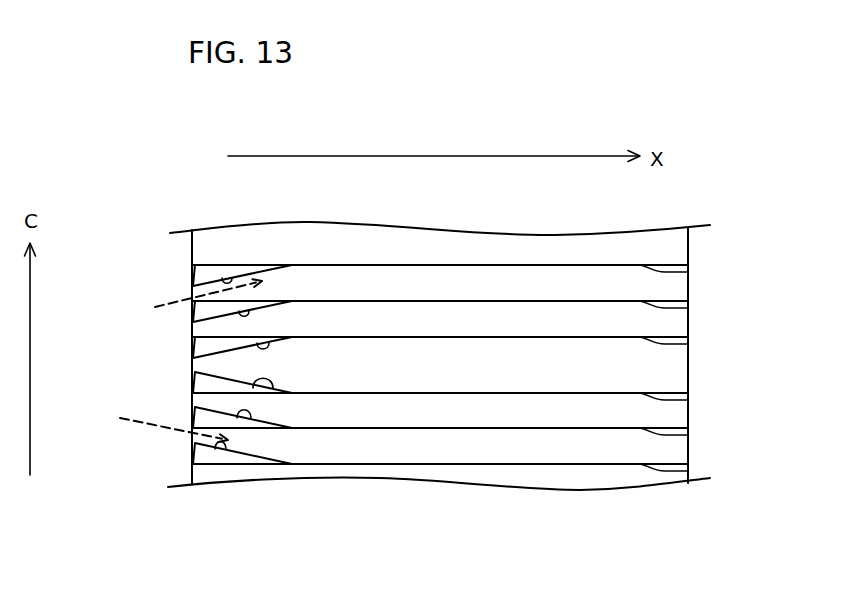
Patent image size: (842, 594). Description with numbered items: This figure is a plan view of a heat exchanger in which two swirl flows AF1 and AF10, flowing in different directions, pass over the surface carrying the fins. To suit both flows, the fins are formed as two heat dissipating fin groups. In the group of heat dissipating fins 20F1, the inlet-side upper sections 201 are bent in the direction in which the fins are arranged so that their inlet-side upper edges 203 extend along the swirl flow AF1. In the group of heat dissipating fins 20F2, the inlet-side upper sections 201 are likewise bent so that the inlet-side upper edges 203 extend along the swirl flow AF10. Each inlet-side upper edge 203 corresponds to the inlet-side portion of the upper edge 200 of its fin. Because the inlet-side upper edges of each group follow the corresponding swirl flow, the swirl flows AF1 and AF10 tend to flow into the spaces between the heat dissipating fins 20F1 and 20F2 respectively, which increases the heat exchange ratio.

The upper edge 200 is at (413, 464).
The inlet-side upper section 201 is at (212, 384).
The inlet-side upper edge 203 is at (287, 495).
The heat dissipating fins 20F1 is at (688, 272).
The heat dissipating fins 20F2 is at (688, 400).
The swirl flow AF1 is at (189, 299).
The swirl flow AF10 is at (148, 423).